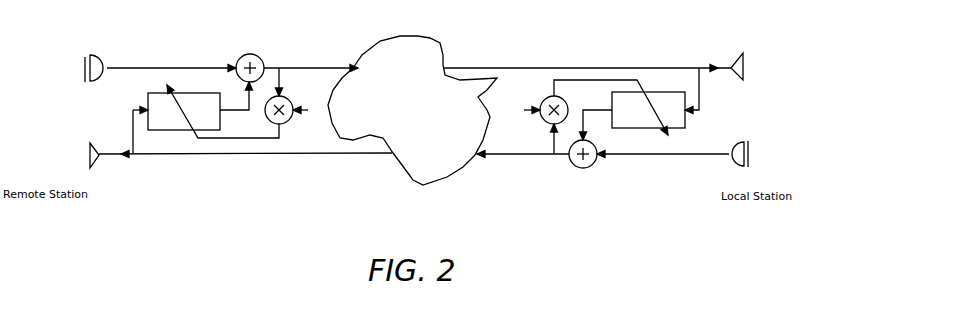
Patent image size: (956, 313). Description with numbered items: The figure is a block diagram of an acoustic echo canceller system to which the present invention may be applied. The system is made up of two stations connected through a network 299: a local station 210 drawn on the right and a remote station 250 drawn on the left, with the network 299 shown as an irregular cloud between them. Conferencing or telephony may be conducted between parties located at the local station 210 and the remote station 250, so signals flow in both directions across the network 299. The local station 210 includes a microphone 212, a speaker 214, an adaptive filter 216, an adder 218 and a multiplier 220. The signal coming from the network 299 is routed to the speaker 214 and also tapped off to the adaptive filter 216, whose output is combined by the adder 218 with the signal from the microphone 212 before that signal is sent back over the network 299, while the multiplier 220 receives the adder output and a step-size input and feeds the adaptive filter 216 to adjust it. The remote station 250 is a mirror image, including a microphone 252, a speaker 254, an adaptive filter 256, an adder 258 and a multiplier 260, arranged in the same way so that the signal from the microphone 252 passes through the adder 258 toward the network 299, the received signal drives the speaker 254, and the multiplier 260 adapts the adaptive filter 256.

The local station 210 is at (690, 32).
The microphone 212 is at (803, 154).
The speaker 214 is at (790, 66).
The adaptive filter 216 is at (685, 122).
The adder 218 is at (593, 166).
The multiplier 220 is at (546, 99).
The remote station 250 is at (135, 22).
The microphone 252 is at (56, 75).
The speaker 254 is at (64, 162).
The adaptive filter 256 is at (220, 124).
The adder 258 is at (256, 56).
The multiplier 260 is at (289, 123).
The network 299 is at (412, 33).